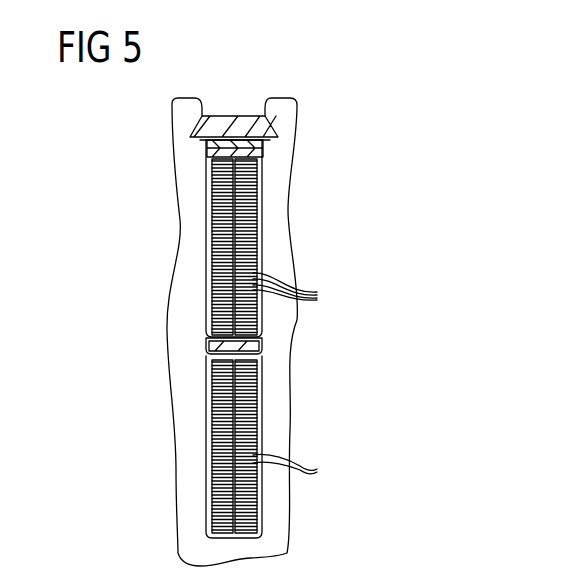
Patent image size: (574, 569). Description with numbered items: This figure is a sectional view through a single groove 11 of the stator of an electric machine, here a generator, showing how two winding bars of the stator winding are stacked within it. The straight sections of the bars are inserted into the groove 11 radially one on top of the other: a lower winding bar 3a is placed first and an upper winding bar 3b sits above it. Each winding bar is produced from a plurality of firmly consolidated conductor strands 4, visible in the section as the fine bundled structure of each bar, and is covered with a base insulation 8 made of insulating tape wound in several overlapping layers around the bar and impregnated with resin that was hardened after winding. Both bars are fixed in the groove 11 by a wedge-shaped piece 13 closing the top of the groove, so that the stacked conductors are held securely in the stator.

The lower winding bar 3a is at (266, 405).
The upper winding bar 3b is at (266, 192).
The conductor strands 4 is at (293, 379).
The base insulation 8 is at (207, 220).
The groove 11 is at (206, 297).
The wedge-shaped piece 13 is at (222, 127).